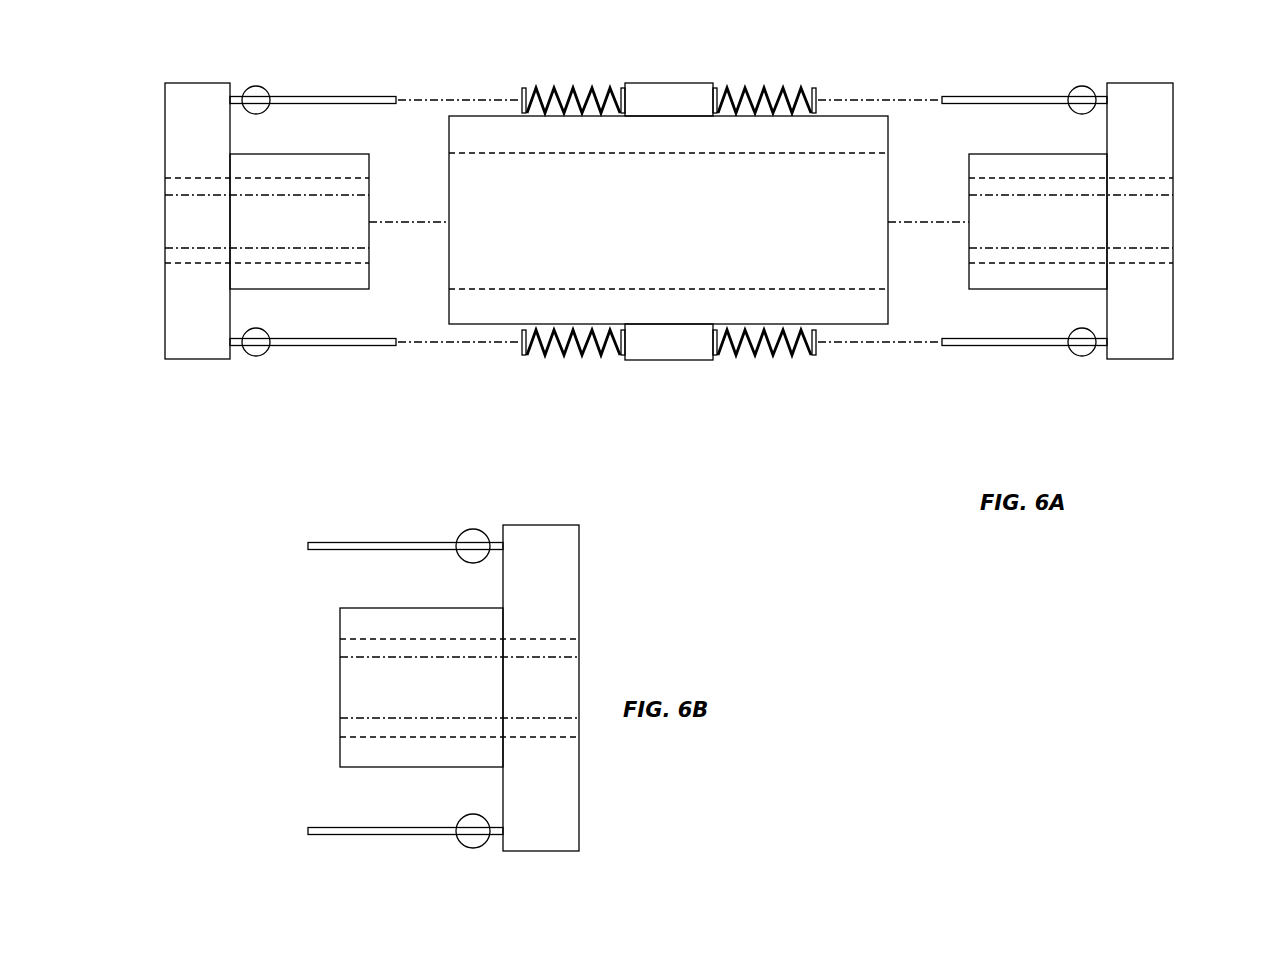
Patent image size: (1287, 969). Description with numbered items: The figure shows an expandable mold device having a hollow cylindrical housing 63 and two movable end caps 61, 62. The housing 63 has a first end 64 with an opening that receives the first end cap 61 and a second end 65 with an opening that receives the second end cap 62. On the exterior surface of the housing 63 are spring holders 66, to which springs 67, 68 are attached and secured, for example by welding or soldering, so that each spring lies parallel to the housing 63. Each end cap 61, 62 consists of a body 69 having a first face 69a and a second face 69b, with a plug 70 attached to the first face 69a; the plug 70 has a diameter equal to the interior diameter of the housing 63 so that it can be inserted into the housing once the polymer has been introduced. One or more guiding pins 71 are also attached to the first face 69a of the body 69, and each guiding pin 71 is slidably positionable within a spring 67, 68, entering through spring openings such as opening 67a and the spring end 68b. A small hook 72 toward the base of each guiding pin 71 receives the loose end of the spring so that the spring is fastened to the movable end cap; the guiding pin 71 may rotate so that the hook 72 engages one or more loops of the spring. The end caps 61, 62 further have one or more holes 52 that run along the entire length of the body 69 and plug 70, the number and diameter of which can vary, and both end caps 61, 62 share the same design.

In FIG. 6A, the holes 52 is at (164, 187).
In FIG. 6B, the holes 52 is at (339, 649).
In FIG. 6A, the first movable end cap 61 is at (131, 97).
In FIG. 6B, the first movable end cap 61 is at (618, 568).
In FIG. 6A, the second movable end cap 62 is at (1200, 105).
In FIG. 6A, the hollow housing 63 is at (502, 263).
In FIG. 6A, the first end of housing 64 is at (448, 190).
In FIG. 6A, the second end of housing 65 is at (889, 190).
In FIG. 6A, the spring holder 66 is at (668, 82).
In FIG. 6A, the first spring 67 is at (569, 86).
In FIG. 6A, the first spring opening 67a is at (519, 96).
In FIG. 6A, the second spring 68 is at (775, 86).
In FIG. 6A, the second spring end 68b is at (819, 96).
In FIG. 6A, the body of end cap 69 is at (203, 328).
In FIG. 6B, the body of end cap 69 is at (548, 782).
In FIG. 6A, the first face of body 69a is at (231, 306).
In FIG. 6A, the second face of body 69b is at (164, 313).
In FIG. 6A, the plug 70 is at (347, 223).
In FIG. 6B, the plug 70 is at (368, 684).
In FIG. 6A, the guiding pin 71 is at (318, 96).
In FIG. 6B, the guiding pin 71 is at (394, 542).
In FIG. 6A, the hook 72 is at (255, 86).
In FIG. 6B, the hook 72 is at (473, 529).